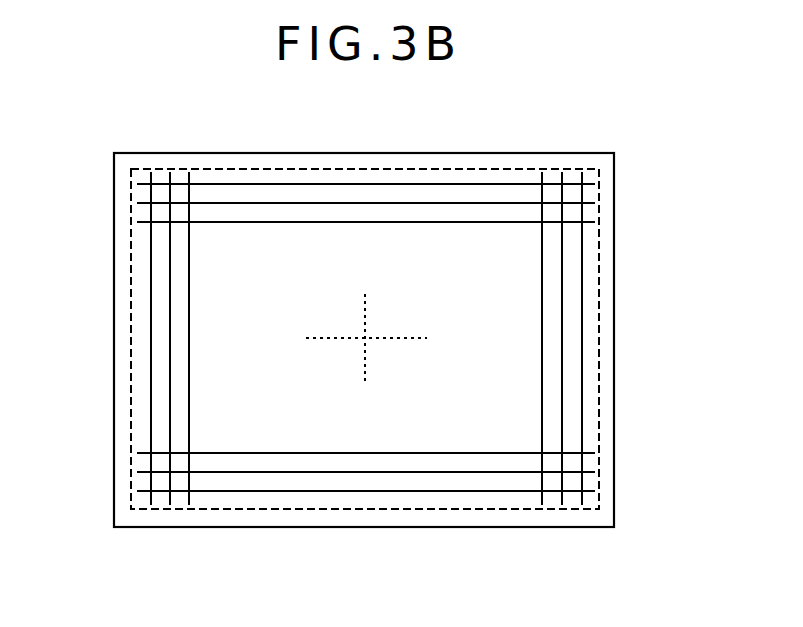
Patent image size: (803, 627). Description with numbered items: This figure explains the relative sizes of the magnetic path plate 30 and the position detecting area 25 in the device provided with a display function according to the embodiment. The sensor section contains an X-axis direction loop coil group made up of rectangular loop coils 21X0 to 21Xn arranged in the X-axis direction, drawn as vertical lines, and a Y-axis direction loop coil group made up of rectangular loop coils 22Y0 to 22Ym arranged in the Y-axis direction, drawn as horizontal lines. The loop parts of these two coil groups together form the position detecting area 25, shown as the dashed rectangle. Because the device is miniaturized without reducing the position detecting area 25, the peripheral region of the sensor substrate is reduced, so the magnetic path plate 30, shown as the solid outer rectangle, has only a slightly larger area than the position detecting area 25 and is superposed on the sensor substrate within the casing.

The magnetic path plate 30 is at (319, 153).
The position detecting area 25 is at (394, 168).
The rectangular loop coil 21X0 is at (149, 497).
The rectangular loop coil 21Xn is at (579, 498).
The rectangular loop coil 22Y0 is at (585, 183).
The rectangular loop coil 22Ym is at (587, 490).